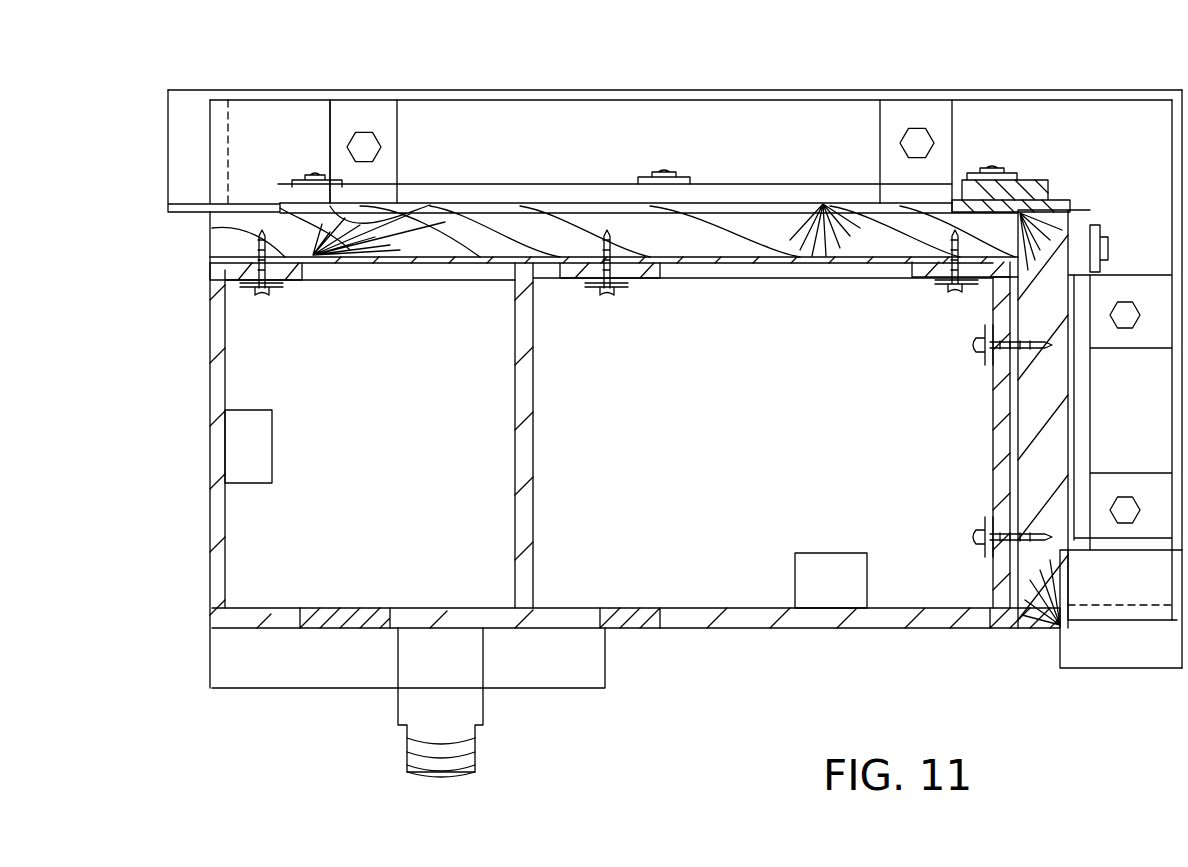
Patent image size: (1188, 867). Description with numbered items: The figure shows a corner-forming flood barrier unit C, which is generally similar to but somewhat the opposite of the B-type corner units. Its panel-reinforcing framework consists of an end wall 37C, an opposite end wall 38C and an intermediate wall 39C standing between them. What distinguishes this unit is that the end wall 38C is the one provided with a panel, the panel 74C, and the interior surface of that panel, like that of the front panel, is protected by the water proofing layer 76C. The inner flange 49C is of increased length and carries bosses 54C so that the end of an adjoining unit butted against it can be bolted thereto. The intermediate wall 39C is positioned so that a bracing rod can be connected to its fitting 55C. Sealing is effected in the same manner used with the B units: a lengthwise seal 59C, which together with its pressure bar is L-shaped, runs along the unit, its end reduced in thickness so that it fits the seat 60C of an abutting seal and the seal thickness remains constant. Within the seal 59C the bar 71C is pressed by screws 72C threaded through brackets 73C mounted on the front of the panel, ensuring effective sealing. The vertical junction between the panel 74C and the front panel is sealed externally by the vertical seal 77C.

The end wall 37C is at (217, 361).
The end wall 38C is at (997, 428).
The intermediate wall 39C is at (525, 397).
The inner flange 49C is at (838, 629).
The bosses 54C is at (865, 572).
The fitting 55C is at (470, 707).
The lengthwise seal 59C is at (665, 93).
The seat 60C is at (190, 117).
The bar 71C is at (1002, 93).
The screws 72C is at (364, 140).
The brackets 73C is at (383, 122).
The panel 74C is at (1022, 626).
The water proofing layer 76C is at (1000, 318).
The vertical seal 77C is at (1072, 200).
The unit C is at (757, 662).